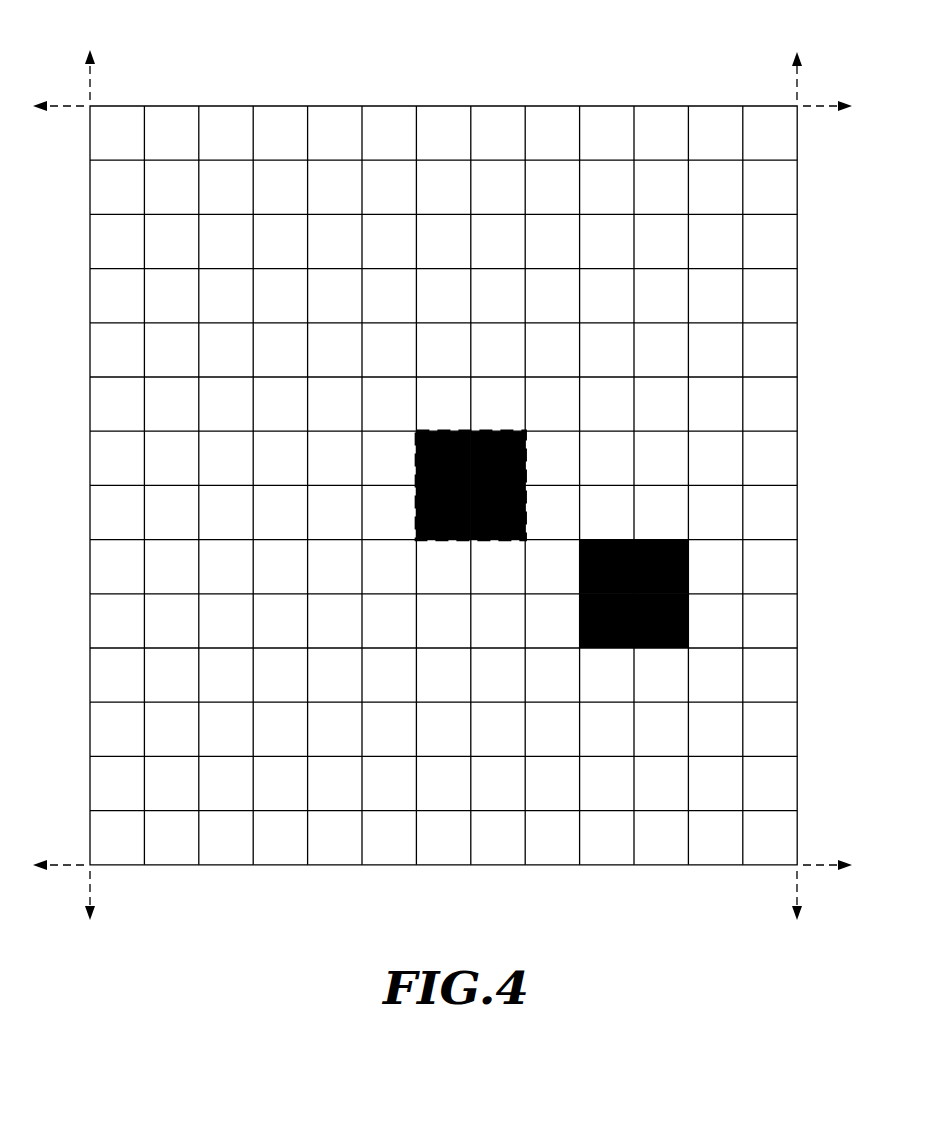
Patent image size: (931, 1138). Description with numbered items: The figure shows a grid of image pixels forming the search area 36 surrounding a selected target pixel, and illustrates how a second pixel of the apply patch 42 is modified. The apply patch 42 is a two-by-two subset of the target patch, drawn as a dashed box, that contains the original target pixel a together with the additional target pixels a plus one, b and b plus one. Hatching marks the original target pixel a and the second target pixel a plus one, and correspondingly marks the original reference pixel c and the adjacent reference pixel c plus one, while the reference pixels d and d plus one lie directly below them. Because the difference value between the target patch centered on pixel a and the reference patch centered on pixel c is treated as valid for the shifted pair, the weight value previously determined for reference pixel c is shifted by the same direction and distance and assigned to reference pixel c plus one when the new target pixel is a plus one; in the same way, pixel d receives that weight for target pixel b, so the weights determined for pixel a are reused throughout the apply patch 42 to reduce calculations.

The search area 36 is at (660, 865).
The apply patch 42 is at (437, 541).
The target pixel a is at (462, 461).
The additional target pixel b is at (443, 512).
The reference pixel c is at (626, 570).
The reference pixel d is at (607, 621).